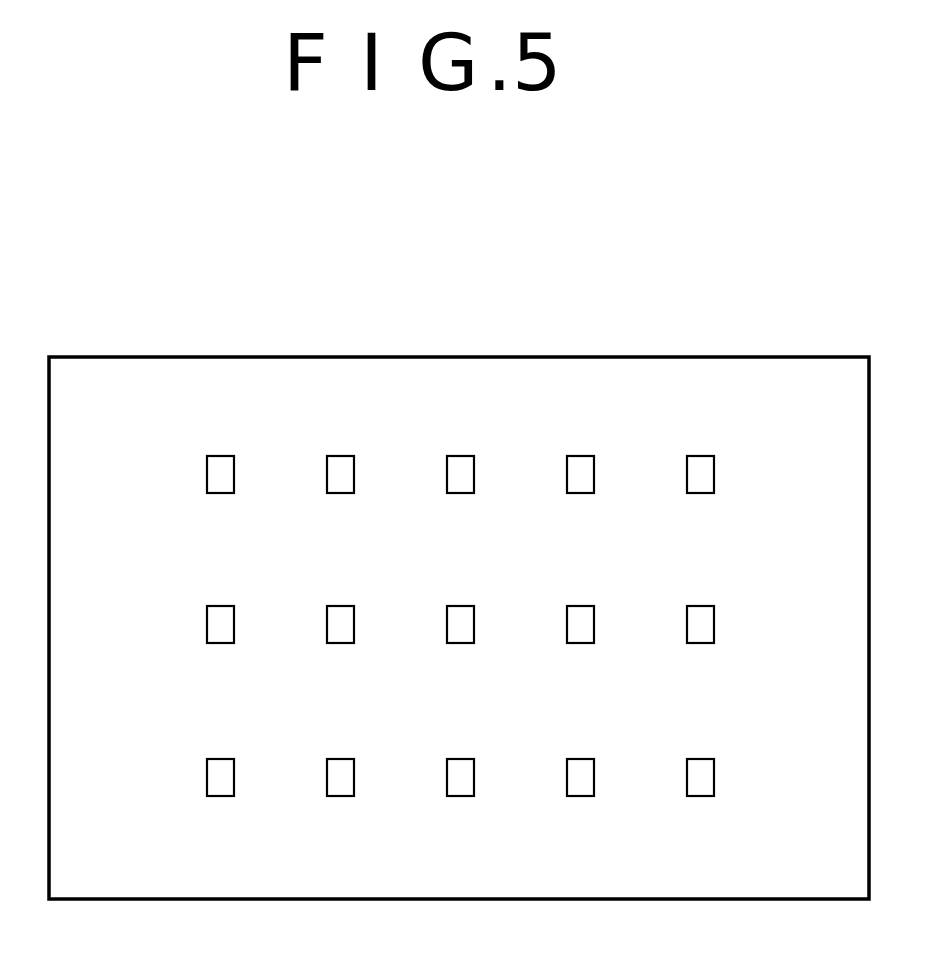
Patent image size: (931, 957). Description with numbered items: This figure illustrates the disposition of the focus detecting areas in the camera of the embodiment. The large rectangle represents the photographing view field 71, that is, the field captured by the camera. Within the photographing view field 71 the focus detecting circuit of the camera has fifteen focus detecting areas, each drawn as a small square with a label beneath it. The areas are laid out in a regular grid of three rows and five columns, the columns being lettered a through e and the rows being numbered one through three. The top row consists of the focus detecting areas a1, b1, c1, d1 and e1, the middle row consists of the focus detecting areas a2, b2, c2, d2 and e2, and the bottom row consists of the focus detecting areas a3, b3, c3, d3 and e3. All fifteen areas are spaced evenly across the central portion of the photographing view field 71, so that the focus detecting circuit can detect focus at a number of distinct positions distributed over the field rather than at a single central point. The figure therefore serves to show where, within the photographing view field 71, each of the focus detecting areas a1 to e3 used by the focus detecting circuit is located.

The photographing view field 71 is at (745, 357).
The focus detecting area a1 is at (222, 506).
The focus detecting area b1 is at (344, 506).
The focus detecting area c1 is at (462, 506).
The focus detecting area d1 is at (585, 506).
The focus detecting area e1 is at (703, 506).
The focus detecting area a2 is at (222, 657).
The focus detecting area b2 is at (344, 657).
The focus detecting area c2 is at (462, 657).
The focus detecting area d2 is at (585, 657).
The focus detecting area e2 is at (703, 657).
The focus detecting area a3 is at (222, 809).
The focus detecting area b3 is at (344, 809).
The focus detecting area c3 is at (462, 809).
The focus detecting area d3 is at (585, 809).
The focus detecting area e3 is at (703, 809).